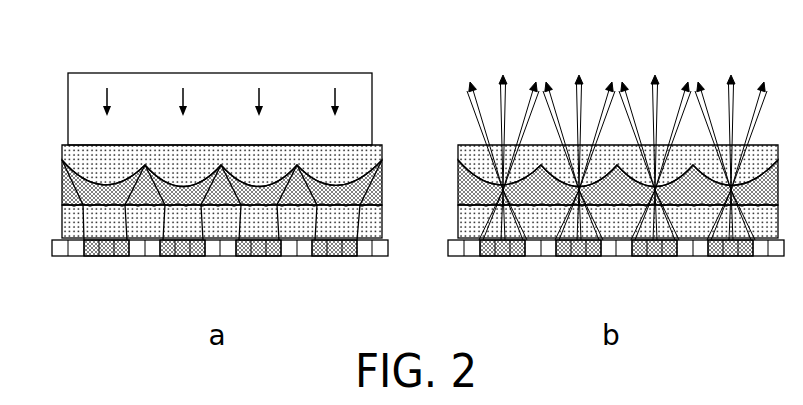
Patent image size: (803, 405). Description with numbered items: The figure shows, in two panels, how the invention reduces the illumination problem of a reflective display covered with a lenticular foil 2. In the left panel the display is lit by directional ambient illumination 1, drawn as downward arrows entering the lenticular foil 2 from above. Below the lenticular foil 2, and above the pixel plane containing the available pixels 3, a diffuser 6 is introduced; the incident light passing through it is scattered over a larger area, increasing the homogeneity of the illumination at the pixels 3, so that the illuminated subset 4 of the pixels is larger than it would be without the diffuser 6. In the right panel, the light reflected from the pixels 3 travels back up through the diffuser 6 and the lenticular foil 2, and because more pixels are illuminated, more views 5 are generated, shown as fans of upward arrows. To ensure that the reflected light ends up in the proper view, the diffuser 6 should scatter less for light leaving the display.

The directional ambient illumination 1 is at (78, 105).
The lenticular foil 2 is at (74, 152).
The pixels 3 is at (362, 257).
The subset of illuminated pixels 4 is at (108, 257).
The views 5 is at (466, 123).
The diffuser 6 is at (72, 228).